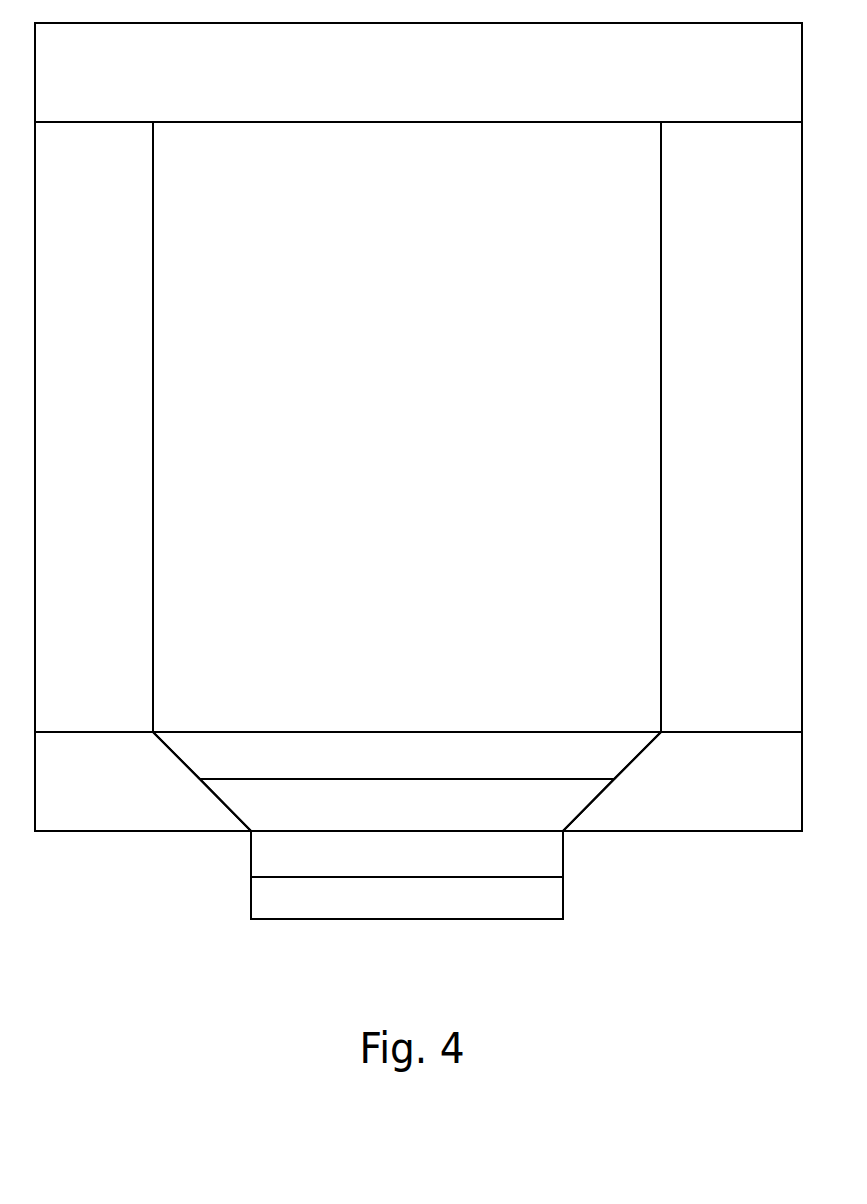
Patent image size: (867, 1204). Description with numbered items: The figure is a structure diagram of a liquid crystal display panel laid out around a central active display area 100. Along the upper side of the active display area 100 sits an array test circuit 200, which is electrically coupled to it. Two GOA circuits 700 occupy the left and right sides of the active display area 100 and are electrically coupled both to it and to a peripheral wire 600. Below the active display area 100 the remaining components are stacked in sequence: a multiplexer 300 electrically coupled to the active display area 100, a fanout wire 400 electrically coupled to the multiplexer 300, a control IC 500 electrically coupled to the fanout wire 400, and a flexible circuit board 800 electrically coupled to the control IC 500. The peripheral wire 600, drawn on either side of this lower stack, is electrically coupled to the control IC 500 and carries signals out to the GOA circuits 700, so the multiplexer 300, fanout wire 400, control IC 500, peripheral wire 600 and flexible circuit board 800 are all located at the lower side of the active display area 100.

The active display area 100 is at (407, 427).
The array test circuit 200 is at (418, 72).
The multiplexer 300 is at (407, 755).
The fanout wire 400 is at (407, 805).
The control IC 500 is at (407, 854).
The peripheral wire 600 is at (418, 781).
The GOA circuit 700 is at (418, 427).
The flexible circuit board 800 is at (407, 898).